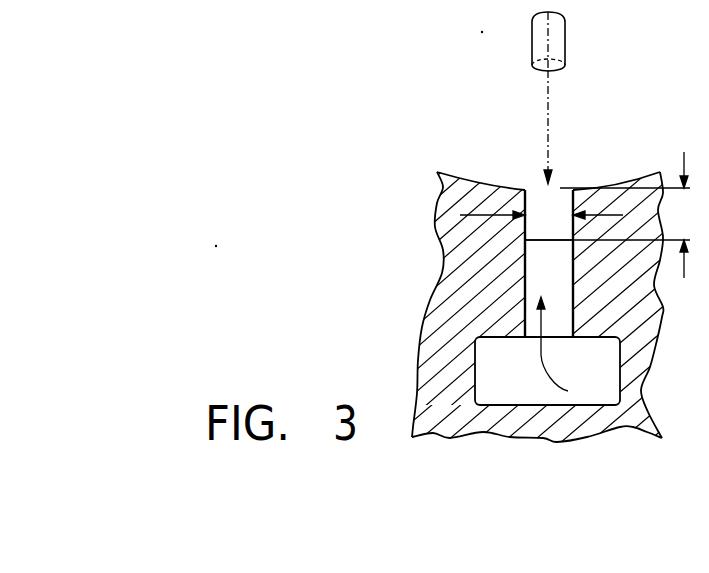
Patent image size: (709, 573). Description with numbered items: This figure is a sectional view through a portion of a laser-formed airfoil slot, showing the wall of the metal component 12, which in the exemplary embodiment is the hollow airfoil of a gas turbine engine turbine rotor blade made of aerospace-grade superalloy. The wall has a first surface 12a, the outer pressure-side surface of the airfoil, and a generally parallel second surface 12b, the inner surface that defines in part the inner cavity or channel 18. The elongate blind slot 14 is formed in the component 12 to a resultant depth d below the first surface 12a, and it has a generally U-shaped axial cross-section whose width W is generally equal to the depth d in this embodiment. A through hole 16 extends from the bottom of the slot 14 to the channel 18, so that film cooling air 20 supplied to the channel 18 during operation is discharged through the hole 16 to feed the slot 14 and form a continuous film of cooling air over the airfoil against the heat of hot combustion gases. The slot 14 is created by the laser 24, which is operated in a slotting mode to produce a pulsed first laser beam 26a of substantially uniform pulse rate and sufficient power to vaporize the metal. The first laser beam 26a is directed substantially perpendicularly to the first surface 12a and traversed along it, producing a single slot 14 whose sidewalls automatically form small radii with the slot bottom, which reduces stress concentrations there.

The component 12 is at (664, 150).
The first surface 12a is at (489, 182).
The second surface 12b is at (605, 338).
The slot 14 is at (576, 203).
The through hole 16 is at (560, 279).
The channel 18 is at (518, 369).
The film cooling air 20 is at (556, 380).
The laser 24 is at (566, 40).
The first laser beam 26a is at (549, 95).
The width W is at (478, 214).
The depth d is at (608, 215).